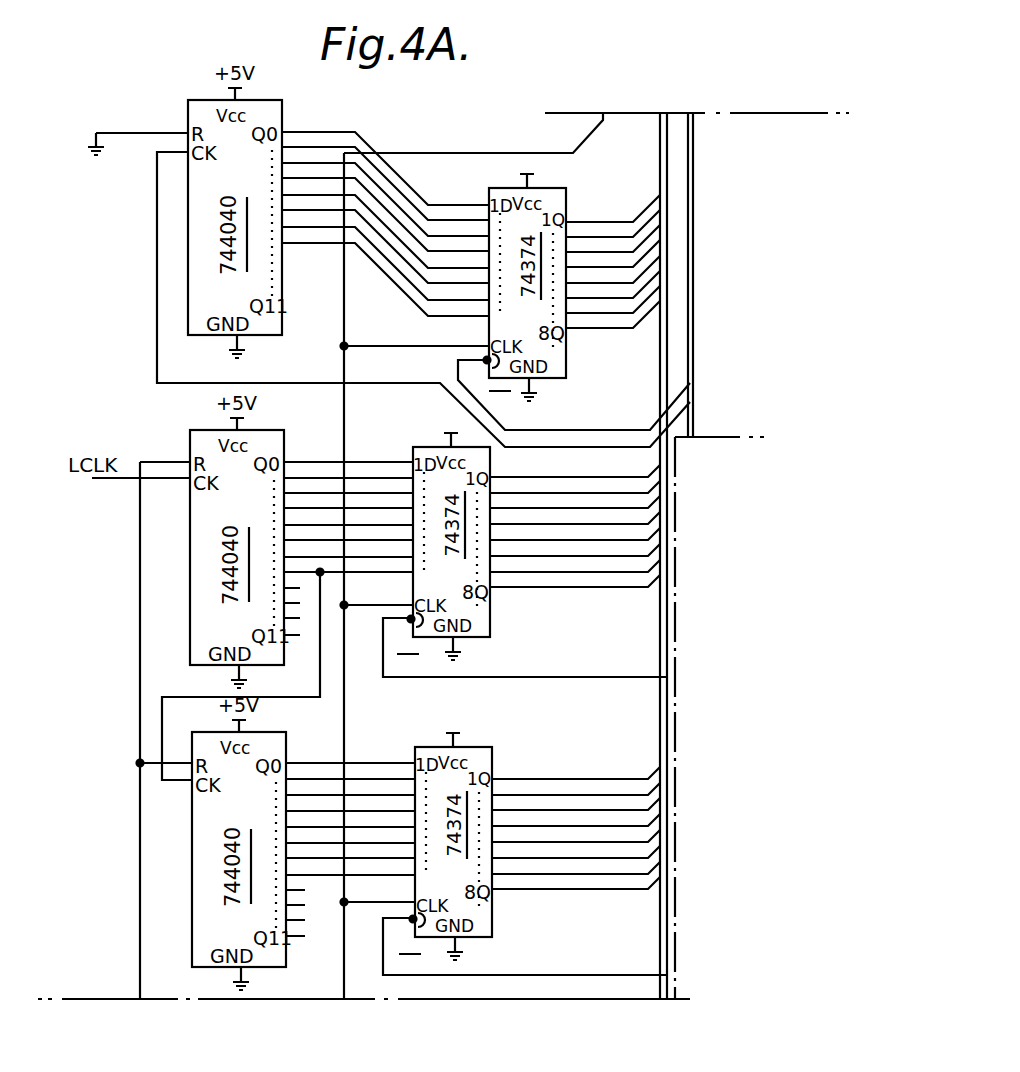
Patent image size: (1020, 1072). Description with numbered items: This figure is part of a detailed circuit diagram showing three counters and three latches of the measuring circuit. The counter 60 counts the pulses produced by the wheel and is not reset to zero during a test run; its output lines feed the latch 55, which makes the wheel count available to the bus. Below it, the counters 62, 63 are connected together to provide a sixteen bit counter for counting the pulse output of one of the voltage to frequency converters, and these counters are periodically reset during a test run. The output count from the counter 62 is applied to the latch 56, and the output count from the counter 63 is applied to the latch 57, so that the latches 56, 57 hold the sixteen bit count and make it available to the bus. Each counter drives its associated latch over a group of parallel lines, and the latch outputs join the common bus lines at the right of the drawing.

The counter 60 is at (190, 100).
The latch 55 is at (490, 190).
The counter 62 is at (192, 432).
The latch 56 is at (414, 448).
The counter 63 is at (212, 733).
The latch 57 is at (416, 748).